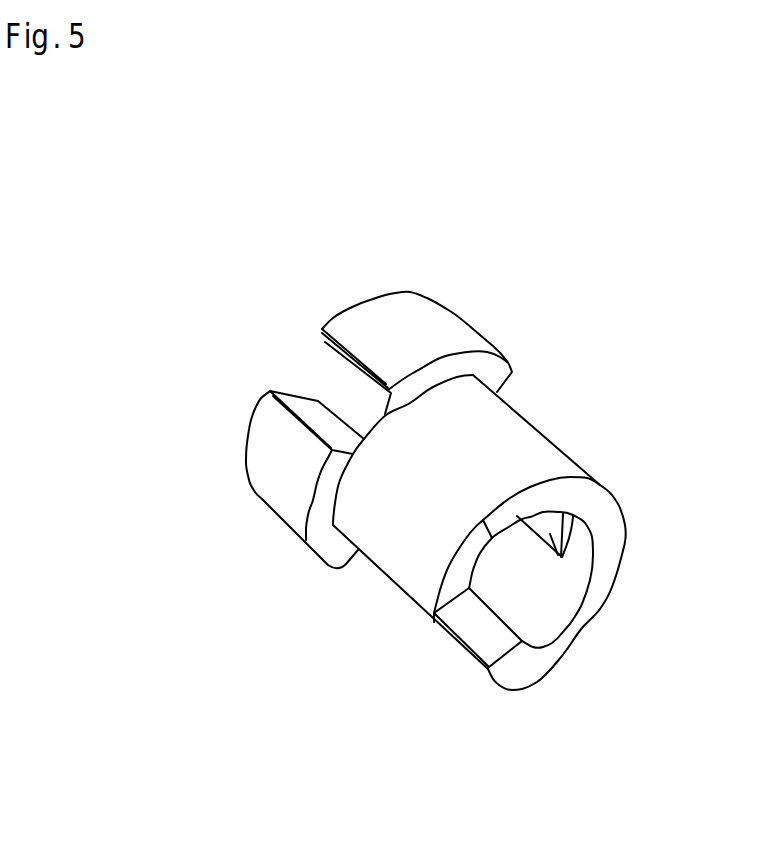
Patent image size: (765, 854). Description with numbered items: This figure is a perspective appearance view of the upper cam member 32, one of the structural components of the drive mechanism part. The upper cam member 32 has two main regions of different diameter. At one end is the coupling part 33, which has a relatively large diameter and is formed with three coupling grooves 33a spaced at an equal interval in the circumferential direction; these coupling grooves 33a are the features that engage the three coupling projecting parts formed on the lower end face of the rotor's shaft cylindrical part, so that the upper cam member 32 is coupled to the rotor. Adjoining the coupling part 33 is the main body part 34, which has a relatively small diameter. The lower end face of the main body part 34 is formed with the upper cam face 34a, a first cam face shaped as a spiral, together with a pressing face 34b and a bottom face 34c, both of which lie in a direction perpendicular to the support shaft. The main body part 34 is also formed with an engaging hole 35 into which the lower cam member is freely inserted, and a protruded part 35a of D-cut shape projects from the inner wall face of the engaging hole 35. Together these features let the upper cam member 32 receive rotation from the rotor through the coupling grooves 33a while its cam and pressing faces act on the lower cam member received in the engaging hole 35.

The upper cam member 32 is at (538, 233).
The coupling part 33 is at (403, 295).
The coupling grooves 33a is at (330, 390).
The main body part 34 is at (525, 419).
The upper cam face 34a is at (597, 496).
The pressing face 34b is at (530, 667).
The bottom face 34c is at (461, 570).
The engaging hole 35 is at (540, 585).
The protruded part 35a is at (560, 557).